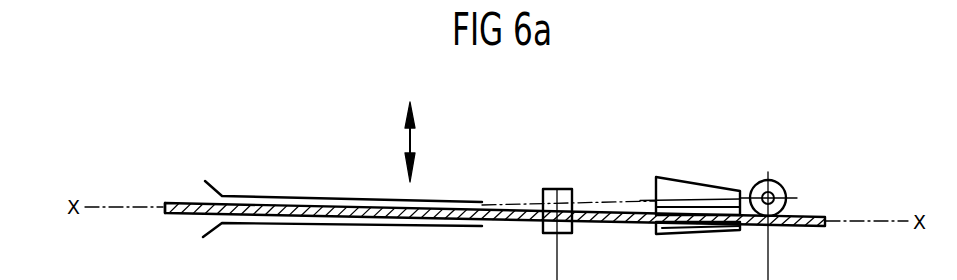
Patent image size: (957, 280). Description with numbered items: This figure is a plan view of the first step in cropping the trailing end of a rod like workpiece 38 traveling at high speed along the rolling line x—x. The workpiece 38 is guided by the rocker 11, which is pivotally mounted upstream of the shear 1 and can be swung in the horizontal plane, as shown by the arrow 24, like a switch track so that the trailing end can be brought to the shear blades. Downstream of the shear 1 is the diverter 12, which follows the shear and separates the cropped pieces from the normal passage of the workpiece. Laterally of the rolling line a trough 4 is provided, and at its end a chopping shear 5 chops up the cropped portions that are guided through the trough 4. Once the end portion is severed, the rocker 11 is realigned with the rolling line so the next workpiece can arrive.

The shear 1 is at (557, 174).
The trough 4 is at (614, 190).
The chopping shear 5 is at (774, 186).
The rocker 11 is at (333, 196).
The diverter 12 is at (678, 187).
The arrow 24 is at (412, 147).
The rod like workpiece 38 is at (187, 203).